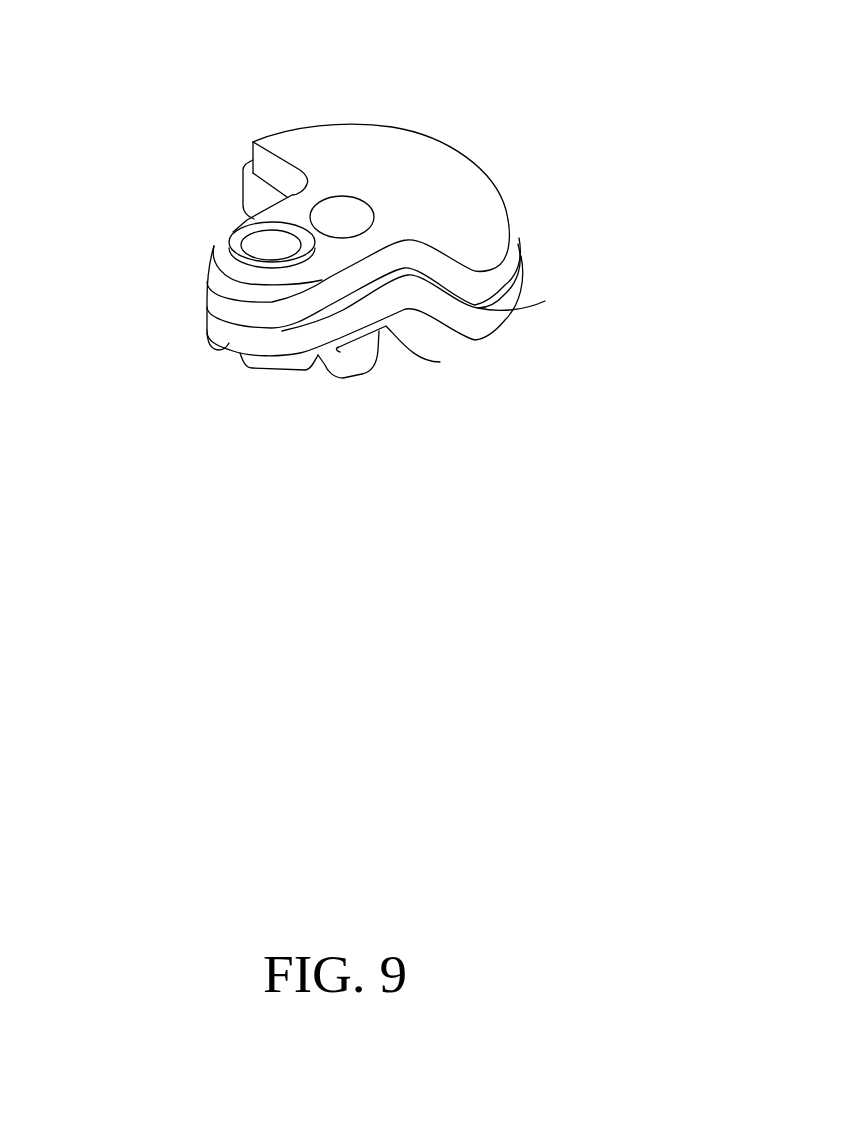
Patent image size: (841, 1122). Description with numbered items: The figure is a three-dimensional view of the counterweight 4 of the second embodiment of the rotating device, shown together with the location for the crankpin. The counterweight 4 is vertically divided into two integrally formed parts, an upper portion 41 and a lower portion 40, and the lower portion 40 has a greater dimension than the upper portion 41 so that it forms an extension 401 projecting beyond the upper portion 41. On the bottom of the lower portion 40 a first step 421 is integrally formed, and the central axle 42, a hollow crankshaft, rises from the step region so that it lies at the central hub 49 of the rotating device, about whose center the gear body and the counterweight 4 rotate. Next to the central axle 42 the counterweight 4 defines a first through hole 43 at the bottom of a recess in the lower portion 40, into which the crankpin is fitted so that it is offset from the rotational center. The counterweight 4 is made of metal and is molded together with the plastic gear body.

The counterweight 4 is at (242, 135).
The lower portion 40 is at (508, 291).
The extension 401 is at (545, 301).
The upper portion 41 is at (430, 190).
The central axle 42 is at (347, 362).
The first step 421 is at (440, 362).
The first through hole 43 is at (262, 243).
The central hub 49 is at (353, 213).